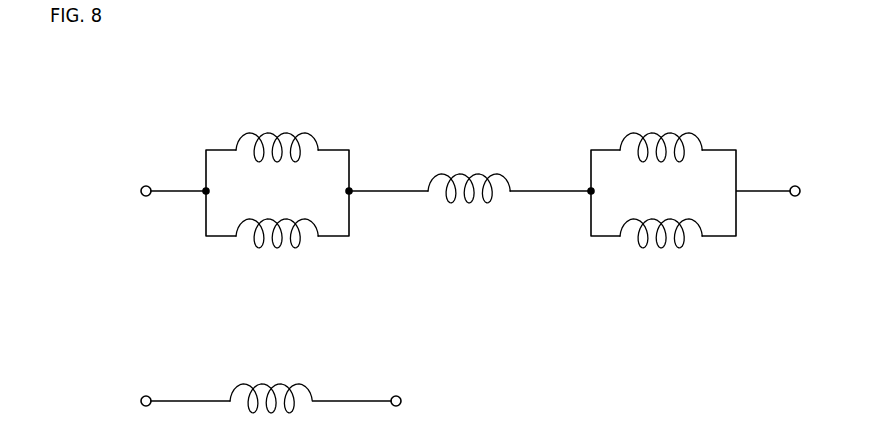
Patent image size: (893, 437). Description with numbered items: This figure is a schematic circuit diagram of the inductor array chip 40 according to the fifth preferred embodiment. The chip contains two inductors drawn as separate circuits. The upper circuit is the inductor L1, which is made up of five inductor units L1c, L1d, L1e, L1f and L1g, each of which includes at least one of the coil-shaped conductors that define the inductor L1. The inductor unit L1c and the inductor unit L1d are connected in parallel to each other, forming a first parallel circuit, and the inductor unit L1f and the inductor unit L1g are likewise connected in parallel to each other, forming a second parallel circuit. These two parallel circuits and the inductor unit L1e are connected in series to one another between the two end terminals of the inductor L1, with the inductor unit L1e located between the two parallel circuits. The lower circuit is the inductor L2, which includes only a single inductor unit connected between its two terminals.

The inductor array chip 40 is at (713, 103).
The inductor L1 is at (505, 155).
The inductor unit L1c is at (287, 133).
The inductor unit L1d is at (293, 248).
The inductor unit L1e is at (465, 203).
The inductor unit L1f is at (672, 134).
The inductor unit L1g is at (662, 248).
The inductor L2 is at (322, 382).